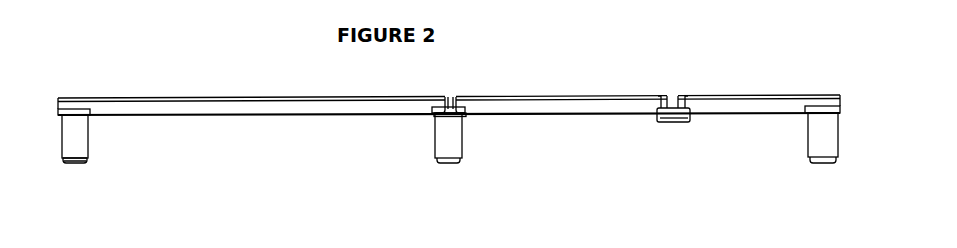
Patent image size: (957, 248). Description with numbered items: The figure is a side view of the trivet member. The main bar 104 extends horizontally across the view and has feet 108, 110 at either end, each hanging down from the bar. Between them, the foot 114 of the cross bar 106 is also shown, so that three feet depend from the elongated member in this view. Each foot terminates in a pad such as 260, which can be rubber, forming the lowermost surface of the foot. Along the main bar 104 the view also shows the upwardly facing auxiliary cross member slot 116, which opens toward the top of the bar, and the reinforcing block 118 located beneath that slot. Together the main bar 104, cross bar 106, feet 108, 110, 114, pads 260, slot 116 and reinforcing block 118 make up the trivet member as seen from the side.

The main bar 104 is at (377, 110).
The cross bar 106 is at (447, 100).
The foot 108 is at (812, 142).
The foot 110 is at (90, 148).
The foot 114 is at (455, 137).
The auxiliary cross member slot 116 is at (675, 95).
The reinforcing block 118 is at (678, 123).
The pad 260 is at (75, 163).